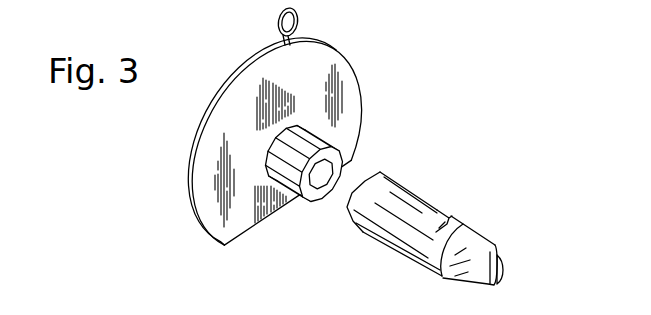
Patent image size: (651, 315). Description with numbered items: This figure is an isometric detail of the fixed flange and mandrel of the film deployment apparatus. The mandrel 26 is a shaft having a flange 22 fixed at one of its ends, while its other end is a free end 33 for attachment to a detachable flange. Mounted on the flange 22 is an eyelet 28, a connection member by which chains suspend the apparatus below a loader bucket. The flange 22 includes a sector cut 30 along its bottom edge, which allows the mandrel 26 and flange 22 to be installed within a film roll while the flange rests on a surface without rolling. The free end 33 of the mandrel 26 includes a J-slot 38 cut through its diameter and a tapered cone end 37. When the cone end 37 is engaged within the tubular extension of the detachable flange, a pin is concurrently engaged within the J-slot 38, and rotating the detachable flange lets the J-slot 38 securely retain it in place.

The flange 22 is at (362, 99).
The mandrel 26 is at (390, 246).
The eyelet 28 is at (278, 20).
The sector cut 30 is at (244, 240).
The free end 33 is at (524, 271).
The tapered cone end 37 is at (463, 281).
The J-slot 38 is at (441, 213).